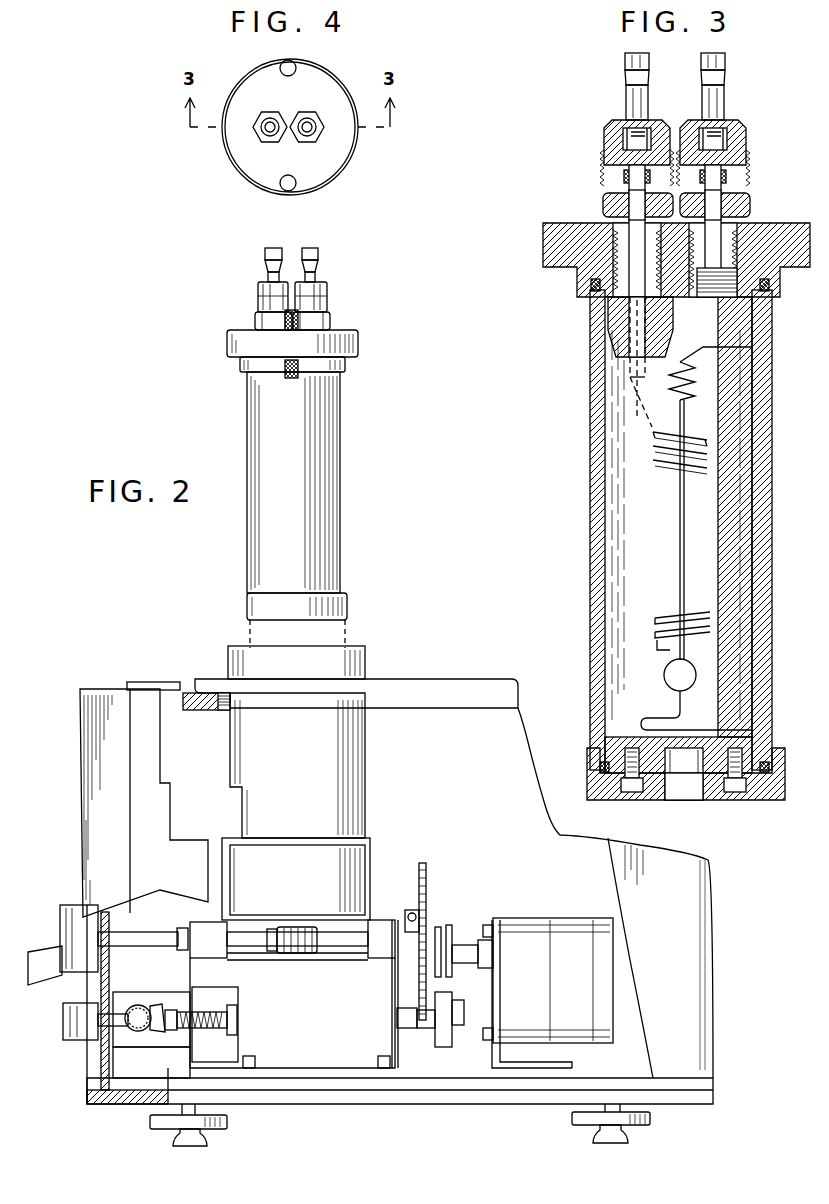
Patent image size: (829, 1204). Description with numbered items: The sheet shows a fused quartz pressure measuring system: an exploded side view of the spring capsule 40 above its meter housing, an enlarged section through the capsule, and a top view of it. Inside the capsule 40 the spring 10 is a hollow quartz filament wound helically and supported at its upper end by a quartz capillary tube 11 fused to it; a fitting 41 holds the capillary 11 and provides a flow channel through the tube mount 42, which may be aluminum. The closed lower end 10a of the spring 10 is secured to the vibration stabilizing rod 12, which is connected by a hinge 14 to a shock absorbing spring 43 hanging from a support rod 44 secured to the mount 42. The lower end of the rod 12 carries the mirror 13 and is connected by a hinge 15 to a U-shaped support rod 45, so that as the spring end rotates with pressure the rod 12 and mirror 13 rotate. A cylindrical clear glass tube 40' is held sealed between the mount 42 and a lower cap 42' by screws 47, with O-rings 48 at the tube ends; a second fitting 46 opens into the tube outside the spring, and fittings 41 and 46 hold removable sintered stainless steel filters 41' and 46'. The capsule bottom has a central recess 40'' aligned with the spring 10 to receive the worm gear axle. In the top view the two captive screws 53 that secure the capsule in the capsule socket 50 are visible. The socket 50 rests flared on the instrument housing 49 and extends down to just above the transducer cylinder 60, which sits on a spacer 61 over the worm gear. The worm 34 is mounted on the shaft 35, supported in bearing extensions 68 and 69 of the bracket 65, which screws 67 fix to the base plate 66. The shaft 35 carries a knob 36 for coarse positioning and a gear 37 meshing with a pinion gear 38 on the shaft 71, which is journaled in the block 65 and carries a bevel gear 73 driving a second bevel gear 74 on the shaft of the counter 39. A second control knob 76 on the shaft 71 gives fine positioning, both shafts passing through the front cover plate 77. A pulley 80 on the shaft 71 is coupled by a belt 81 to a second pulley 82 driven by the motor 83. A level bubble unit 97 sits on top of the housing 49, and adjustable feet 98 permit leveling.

In FIG. 3, the spring 10 is at (655, 460).
In FIG. 3, the lower end of the spring 10a is at (669, 631).
In FIG. 3, the quartz capillary tube 11 is at (646, 422).
In FIG. 3, the vibration stabilizing rod 12 is at (685, 540).
In FIG. 3, the mirror 13 is at (692, 665).
In FIG. 3, the hinge 14 is at (683, 412).
In FIG. 3, the hinge 15 is at (684, 706).
In FIG. 2, the worm 34 is at (296, 927).
In FIG. 2, the shaft 35 is at (330, 962).
In FIG. 2, the knob 36 is at (62, 920).
In FIG. 2, the gear 37 is at (426, 876).
In FIG. 2, the pinion gear 38 is at (420, 1030).
In FIG. 2, the counter 39 is at (128, 992).
In FIG. 4, the spring capsule 40 is at (352, 56).
In FIG. 3, the spring capsule 40 is at (588, 76).
In FIG. 2, the spring capsule 40 is at (349, 260).
In FIG. 3, the cylindrical clear glass tube 40' is at (660, 530).
In FIG. 2, the cylindrical clear glass tube 40' is at (321, 482).
In FIG. 3, the central recess 40'' is at (678, 785).
In FIG. 4, the fitting 41 is at (263, 115).
In FIG. 3, the fitting 41 is at (608, 175).
In FIG. 2, the fitting 41 is at (252, 289).
In FIG. 3, the sintered stainless steel filter 41' is at (620, 153).
In FIG. 4, the tube mount 42 is at (301, 127).
In FIG. 3, the tube mount 42 is at (650, 260).
In FIG. 2, the tube mount 42 is at (266, 353).
In FIG. 3, the lower cap 42' is at (670, 785).
In FIG. 2, the lower cap 42' is at (322, 618).
In FIG. 3, the shock absorbing spring 43 is at (693, 384).
In FIG. 3, the support rod 44 is at (700, 347).
In FIG. 3, the U-shaped support rod 45 is at (658, 716).
In FIG. 4, the second fitting 46 is at (311, 115).
In FIG. 3, the second fitting 46 is at (740, 175).
In FIG. 2, the second fitting 46 is at (342, 291).
In FIG. 3, the sintered stainless steel filter 46' is at (733, 157).
In FIG. 3, the screws 47 is at (634, 792).
In FIG. 3, the O-rings 48 is at (591, 285).
In FIG. 2, the instrument housing 49 is at (475, 681).
In FIG. 2, the capsule socket 50 is at (365, 795).
In FIG. 4, the captive screws 53 is at (280, 66).
In FIG. 2, the captive screws 53 is at (298, 318).
In FIG. 2, the transducer cylinder 60 is at (302, 869).
In FIG. 2, the spacer 61 is at (255, 930).
In FIG. 2, the bracket 65 is at (307, 1003).
In FIG. 2, the base plate 66 is at (490, 1078).
In FIG. 2, the screws 67 is at (252, 1058).
In FIG. 2, the extension 68 is at (381, 939).
In FIG. 2, the extension 69 is at (220, 947).
In FIG. 2, the shaft 71 is at (218, 1030).
In FIG. 2, the bevel gear 73 is at (162, 1004).
In FIG. 2, the second bevel gear 74 is at (142, 1005).
In FIG. 2, the second control knob 76 is at (82, 1045).
In FIG. 2, the front cover plate 77 is at (104, 912).
In FIG. 2, the pulley 80 is at (452, 1005).
In FIG. 2, the belt 81 is at (440, 927).
In FIG. 2, the second pulley 82 is at (452, 930).
In FIG. 2, the motor 83 is at (520, 918).
In FIG. 2, the level bubble unit 97 is at (150, 682).
In FIG. 2, the adjustable feet 98 is at (227, 1122).